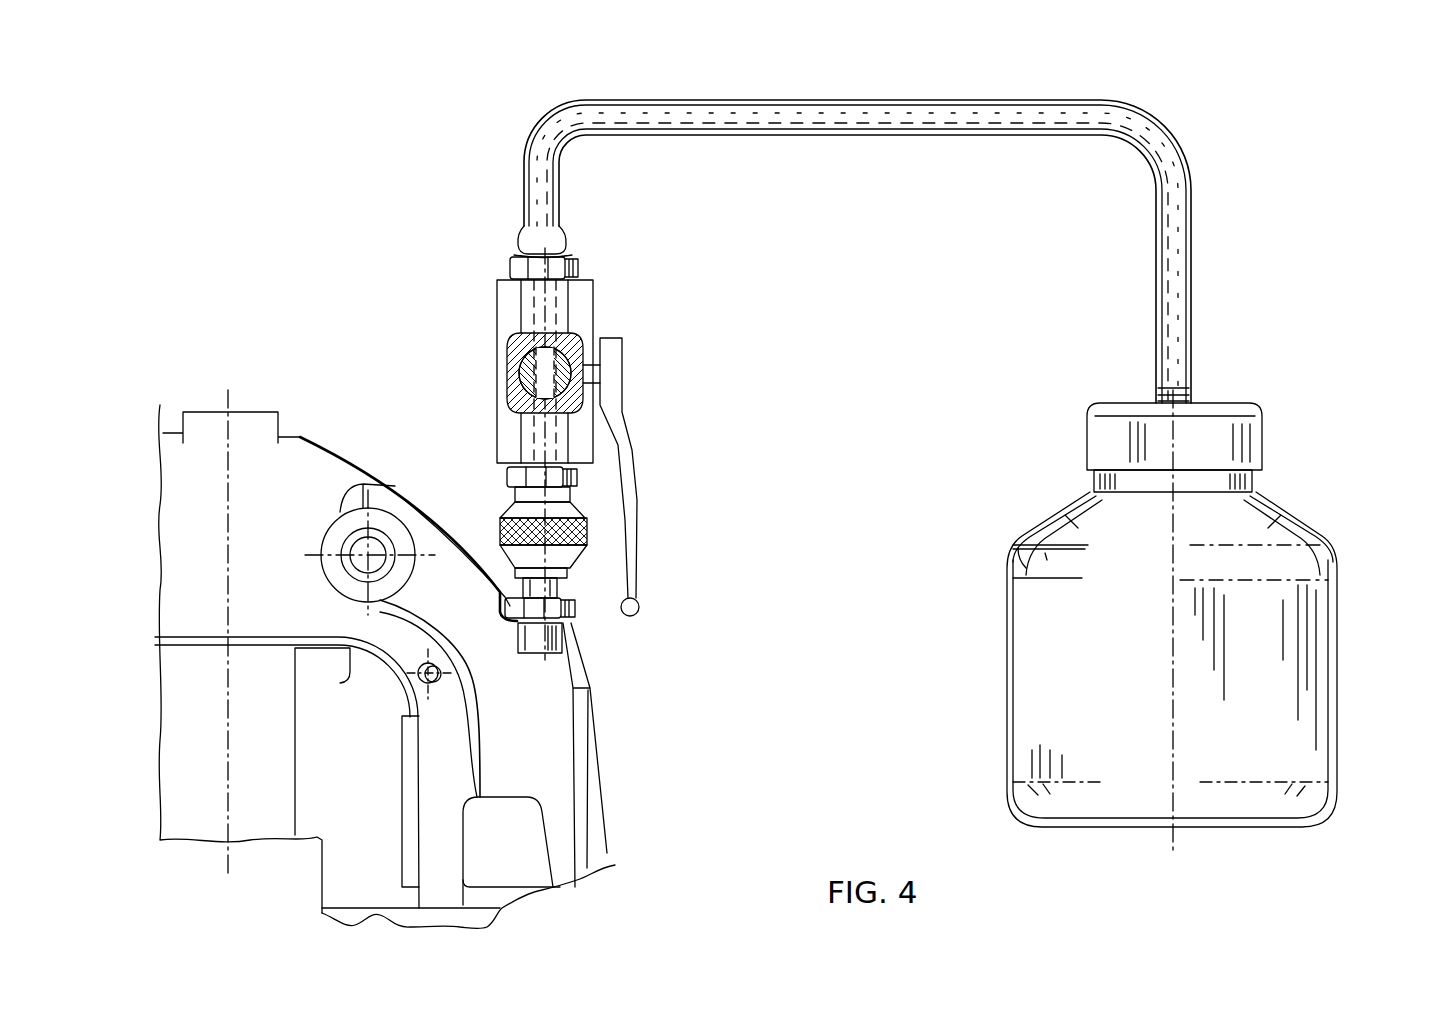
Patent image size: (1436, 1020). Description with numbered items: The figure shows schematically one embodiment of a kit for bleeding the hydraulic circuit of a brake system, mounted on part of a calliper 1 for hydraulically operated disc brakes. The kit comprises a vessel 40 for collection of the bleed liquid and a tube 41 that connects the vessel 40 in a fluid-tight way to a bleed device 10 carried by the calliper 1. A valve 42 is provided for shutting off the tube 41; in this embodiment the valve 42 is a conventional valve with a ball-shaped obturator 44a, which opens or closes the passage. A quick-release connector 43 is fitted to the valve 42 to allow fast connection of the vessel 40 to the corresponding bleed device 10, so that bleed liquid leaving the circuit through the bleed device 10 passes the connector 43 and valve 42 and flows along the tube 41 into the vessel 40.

The calliper 1 is at (577, 764).
The bleed device 10 is at (489, 518).
The vessel 40 is at (1337, 607).
The tube 41 is at (922, 110).
The valve 42 is at (493, 348).
The quick-release connector 43 is at (578, 478).
The ball-shaped obturator 44a is at (572, 336).